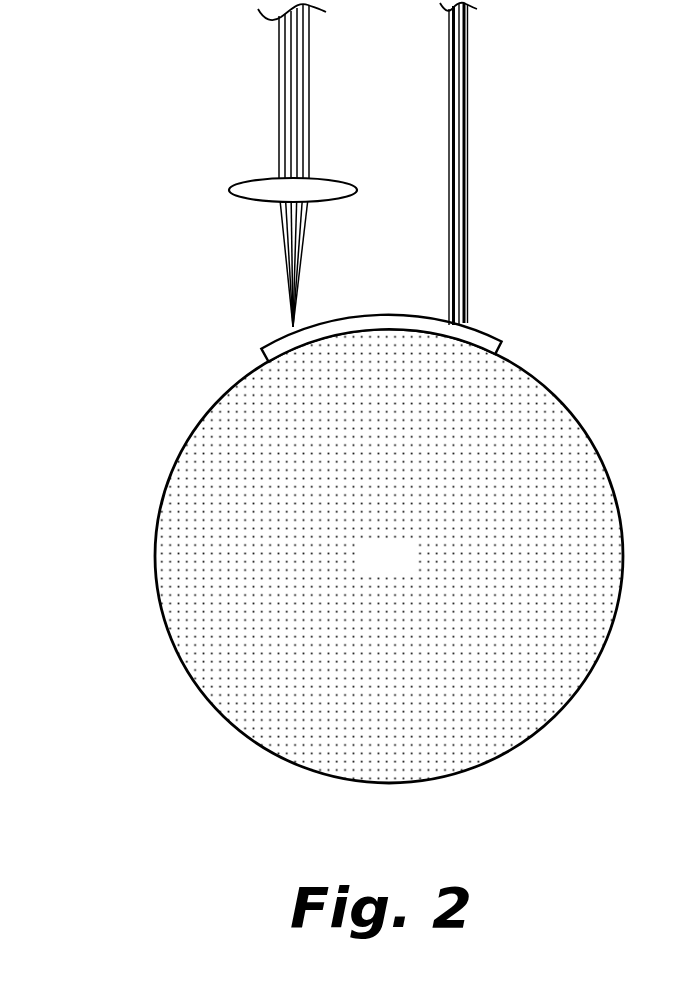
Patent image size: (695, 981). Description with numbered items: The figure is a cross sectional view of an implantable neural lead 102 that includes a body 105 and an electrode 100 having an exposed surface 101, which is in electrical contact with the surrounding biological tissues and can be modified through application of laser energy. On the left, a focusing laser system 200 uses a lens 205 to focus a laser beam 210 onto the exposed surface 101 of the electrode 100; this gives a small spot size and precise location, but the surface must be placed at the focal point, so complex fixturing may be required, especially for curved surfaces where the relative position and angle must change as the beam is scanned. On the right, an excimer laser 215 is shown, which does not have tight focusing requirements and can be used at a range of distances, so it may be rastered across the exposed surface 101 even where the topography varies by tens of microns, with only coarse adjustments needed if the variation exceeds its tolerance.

The electrode 100 is at (340, 511).
The exposed surface 101 is at (403, 314).
The implantable neural lead 102 is at (329, 556).
The body 105 is at (408, 570).
The focusing laser system 200 is at (315, 165).
The lens 205 is at (255, 193).
The laser beam 210 is at (284, 93).
The excimer laser 215 is at (468, 78).